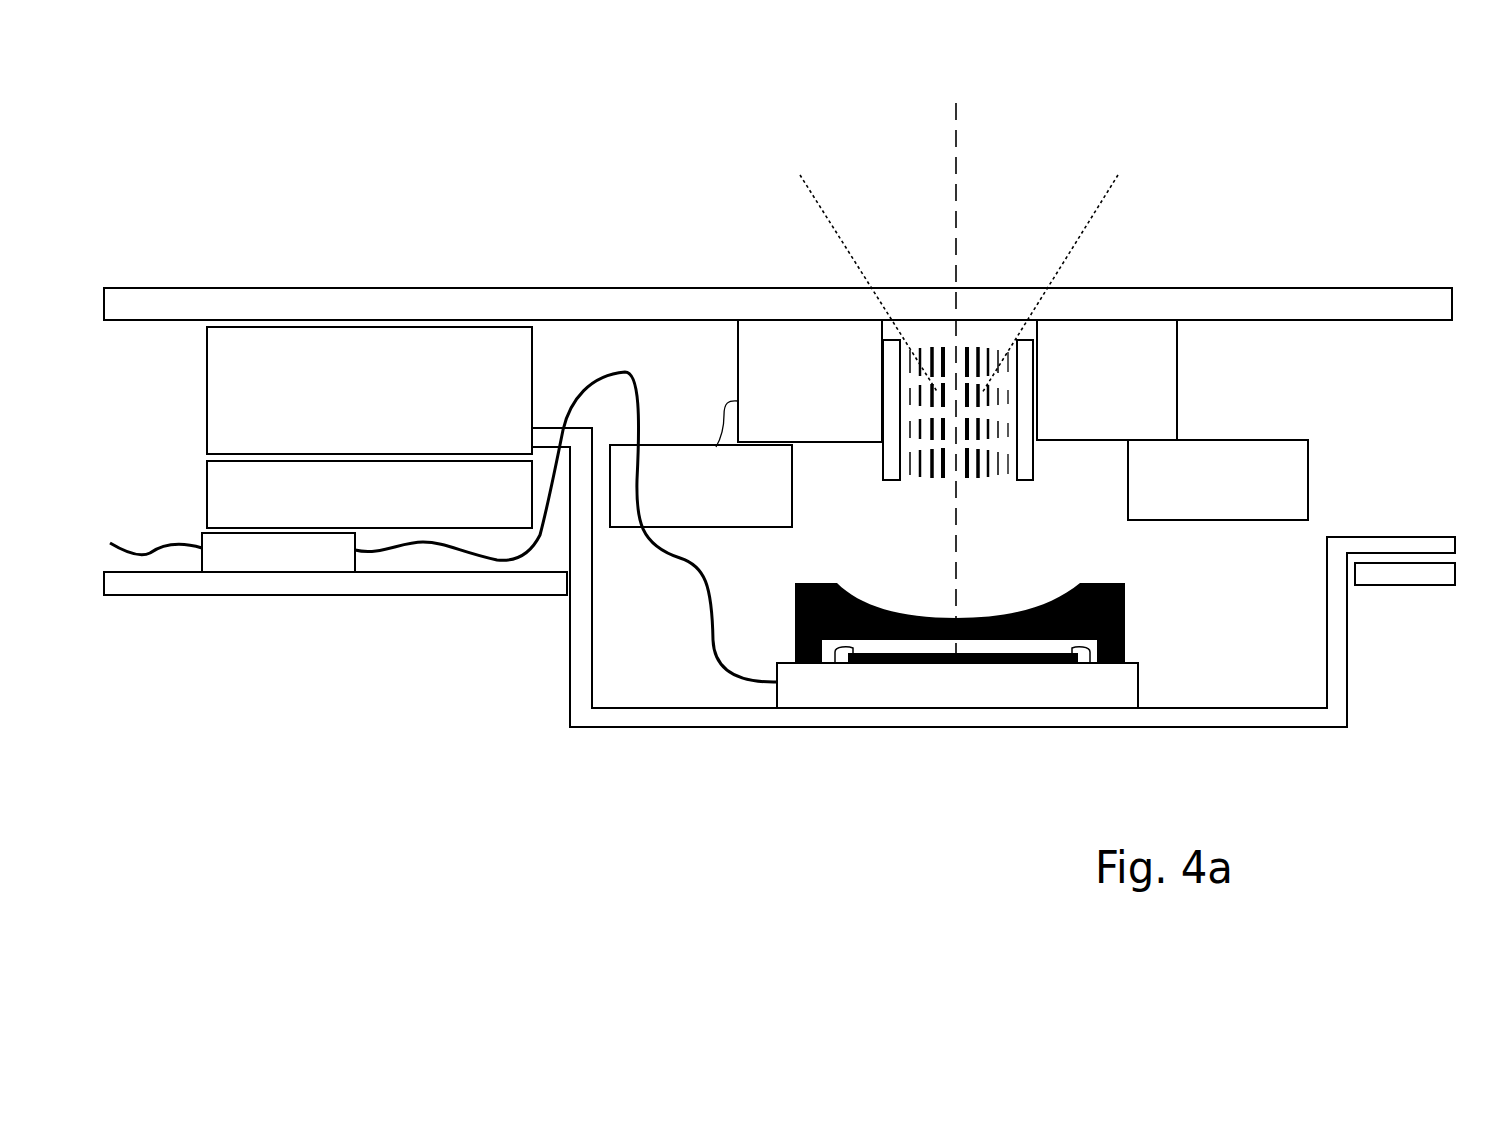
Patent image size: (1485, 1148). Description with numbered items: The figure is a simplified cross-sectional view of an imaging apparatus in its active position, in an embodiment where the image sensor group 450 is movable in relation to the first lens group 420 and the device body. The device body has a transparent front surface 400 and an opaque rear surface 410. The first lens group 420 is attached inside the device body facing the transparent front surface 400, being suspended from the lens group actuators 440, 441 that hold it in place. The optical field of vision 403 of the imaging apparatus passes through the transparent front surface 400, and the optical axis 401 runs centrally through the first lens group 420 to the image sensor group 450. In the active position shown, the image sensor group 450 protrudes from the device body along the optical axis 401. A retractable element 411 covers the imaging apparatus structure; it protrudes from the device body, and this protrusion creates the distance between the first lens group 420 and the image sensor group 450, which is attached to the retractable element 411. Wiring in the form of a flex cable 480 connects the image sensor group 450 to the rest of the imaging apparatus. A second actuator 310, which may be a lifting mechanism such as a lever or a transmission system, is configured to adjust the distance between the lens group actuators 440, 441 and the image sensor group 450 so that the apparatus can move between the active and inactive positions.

The second actuator 310 is at (310, 353).
The transparent front surface 400 is at (422, 297).
The optical axis 401 is at (955, 165).
The optical field of vision 403 is at (1073, 248).
The opaque rear surface 410 is at (300, 577).
The retractable element 411 is at (752, 728).
The first lens group 420 is at (942, 353).
The lens group actuator 440 is at (760, 353).
The lens group actuator 441 is at (708, 493).
The image sensor group 450 is at (960, 663).
The flex cable 480 is at (473, 557).